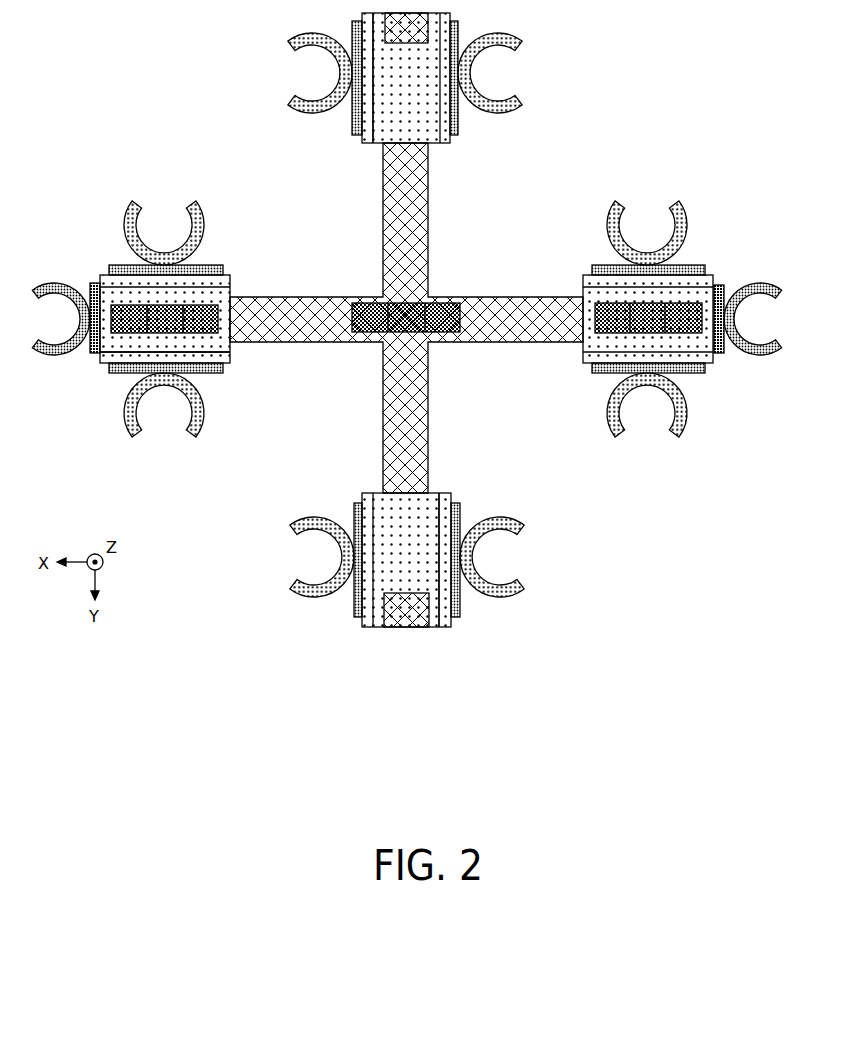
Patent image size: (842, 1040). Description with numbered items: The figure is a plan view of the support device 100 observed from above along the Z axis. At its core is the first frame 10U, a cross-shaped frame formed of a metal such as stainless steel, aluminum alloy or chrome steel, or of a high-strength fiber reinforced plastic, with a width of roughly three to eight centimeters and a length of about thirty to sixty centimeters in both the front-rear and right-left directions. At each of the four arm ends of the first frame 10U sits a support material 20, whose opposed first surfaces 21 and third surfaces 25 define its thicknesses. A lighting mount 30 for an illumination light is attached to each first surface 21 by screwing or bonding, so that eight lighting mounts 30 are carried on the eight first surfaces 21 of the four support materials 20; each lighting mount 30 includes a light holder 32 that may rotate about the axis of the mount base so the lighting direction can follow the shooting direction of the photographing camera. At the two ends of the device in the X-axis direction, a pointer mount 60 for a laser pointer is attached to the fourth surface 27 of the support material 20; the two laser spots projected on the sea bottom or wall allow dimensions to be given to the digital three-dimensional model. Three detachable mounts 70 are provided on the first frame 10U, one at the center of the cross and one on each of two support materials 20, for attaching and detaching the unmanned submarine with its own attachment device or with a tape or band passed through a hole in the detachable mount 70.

The support device 100 is at (129, 107).
The first frame 10U is at (392, 242).
The support material 20 is at (443, 132).
The first surface 21 is at (362, 143).
The third surface 25 is at (373, 138).
The fourth surface 27 is at (96, 283).
The lighting mount 30 is at (296, 41).
The light holder 32 is at (203, 404).
The pointer mount 60 is at (58, 291).
The detachable mount 70 is at (380, 301).